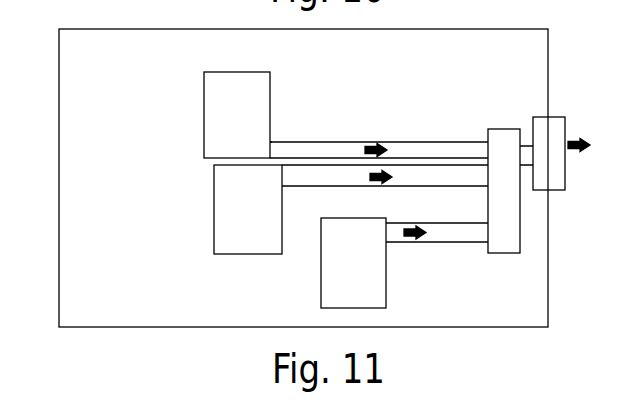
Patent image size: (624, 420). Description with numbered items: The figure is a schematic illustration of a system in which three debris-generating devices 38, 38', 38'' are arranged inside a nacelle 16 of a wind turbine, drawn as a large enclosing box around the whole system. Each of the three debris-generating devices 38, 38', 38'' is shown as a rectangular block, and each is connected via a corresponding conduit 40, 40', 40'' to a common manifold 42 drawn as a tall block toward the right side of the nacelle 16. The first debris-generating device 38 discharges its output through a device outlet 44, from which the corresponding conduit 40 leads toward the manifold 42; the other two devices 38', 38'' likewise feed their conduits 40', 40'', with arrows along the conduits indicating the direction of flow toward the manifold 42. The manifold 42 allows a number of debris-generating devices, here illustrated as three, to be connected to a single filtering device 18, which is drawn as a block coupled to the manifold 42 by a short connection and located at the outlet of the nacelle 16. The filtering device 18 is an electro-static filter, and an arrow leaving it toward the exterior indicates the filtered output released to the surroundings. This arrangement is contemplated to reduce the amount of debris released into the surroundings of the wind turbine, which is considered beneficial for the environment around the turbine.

The nacelle 16 is at (99, 48).
The filtering device 18 is at (550, 135).
The debris-generating device 38 is at (212, 115).
The debris-generating device 38' is at (219, 209).
The debris-generating device 38'' is at (379, 266).
The conduit 40 is at (379, 113).
The conduit 40' is at (365, 232).
The conduit 40'' is at (437, 255).
The manifold 42 is at (499, 150).
The device outlet 44 is at (272, 142).